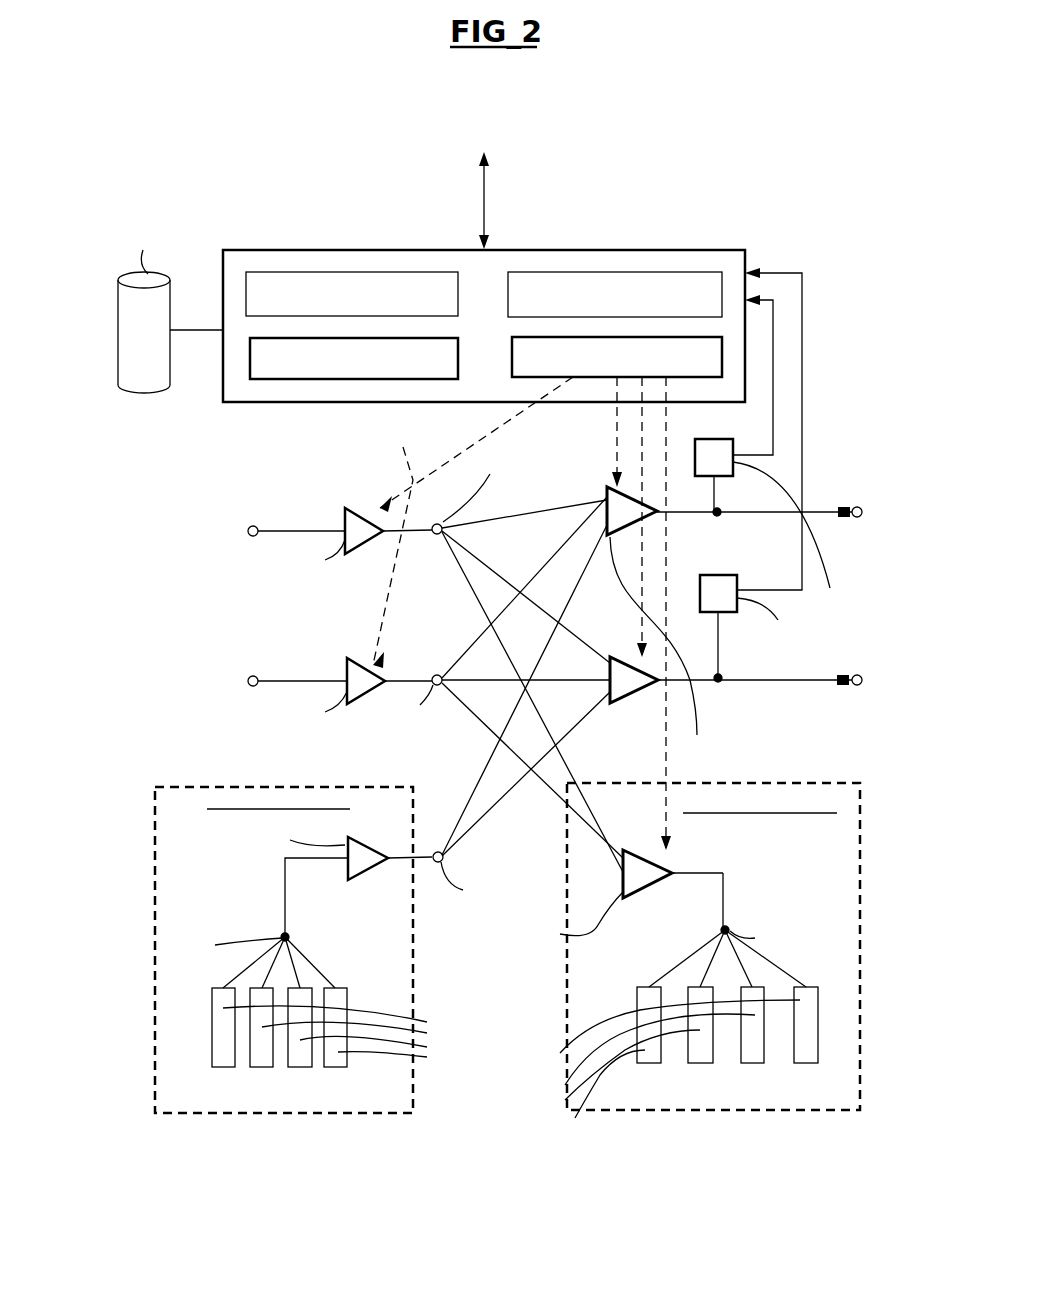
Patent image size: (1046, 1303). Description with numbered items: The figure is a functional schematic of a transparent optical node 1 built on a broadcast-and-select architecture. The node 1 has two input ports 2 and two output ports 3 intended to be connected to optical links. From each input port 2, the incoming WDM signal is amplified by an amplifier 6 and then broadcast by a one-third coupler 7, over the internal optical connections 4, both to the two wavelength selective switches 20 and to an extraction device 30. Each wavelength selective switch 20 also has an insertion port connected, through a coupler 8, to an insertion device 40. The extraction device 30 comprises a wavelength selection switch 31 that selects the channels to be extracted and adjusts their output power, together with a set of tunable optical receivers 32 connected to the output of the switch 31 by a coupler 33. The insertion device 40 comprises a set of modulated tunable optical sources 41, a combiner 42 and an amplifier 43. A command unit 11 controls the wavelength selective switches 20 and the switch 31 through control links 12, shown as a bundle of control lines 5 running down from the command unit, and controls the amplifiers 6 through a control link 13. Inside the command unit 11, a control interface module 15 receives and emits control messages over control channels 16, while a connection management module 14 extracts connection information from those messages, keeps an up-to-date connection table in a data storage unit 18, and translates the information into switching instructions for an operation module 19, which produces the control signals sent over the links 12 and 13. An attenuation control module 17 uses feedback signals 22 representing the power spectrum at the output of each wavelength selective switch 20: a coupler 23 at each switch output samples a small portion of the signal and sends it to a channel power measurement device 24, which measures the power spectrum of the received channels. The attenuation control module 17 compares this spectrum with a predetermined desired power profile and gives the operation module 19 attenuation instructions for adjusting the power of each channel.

The optical network node 1 is at (849, 477).
The input port 2 is at (253, 526).
The output port 3 is at (857, 518).
The optical fiber link 4 is at (595, 498).
The control link 5 is at (656, 567).
The amplifier 6 is at (358, 508).
The coupler 7 is at (438, 523).
The coupler 8 is at (440, 862).
The command unit 11 is at (691, 252).
The control link 12 is at (615, 425).
The control link 13 is at (399, 544).
The connection management module 14 is at (290, 402).
The control interface module 15 is at (320, 272).
The control channel 16 is at (480, 195).
The attenuation control module 17 is at (585, 272).
The data storage unit 18 is at (118, 318).
The operation module 19 is at (512, 352).
The wavelength selective switch 20 is at (607, 486).
The feedback signal 22 is at (803, 318).
The coupler 23 is at (717, 516).
The channel power measurement device 24 is at (735, 465).
The extraction device 30 is at (860, 822).
The wavelength selection switch 31 is at (620, 900).
The tunable optical receiver 32 is at (649, 1063).
The coupler 33 is at (728, 928).
The insertion device 40 is at (155, 850).
The tunable optical source 41 is at (223, 1067).
The combiner 42 is at (283, 935).
The amplifier 43 is at (365, 880).